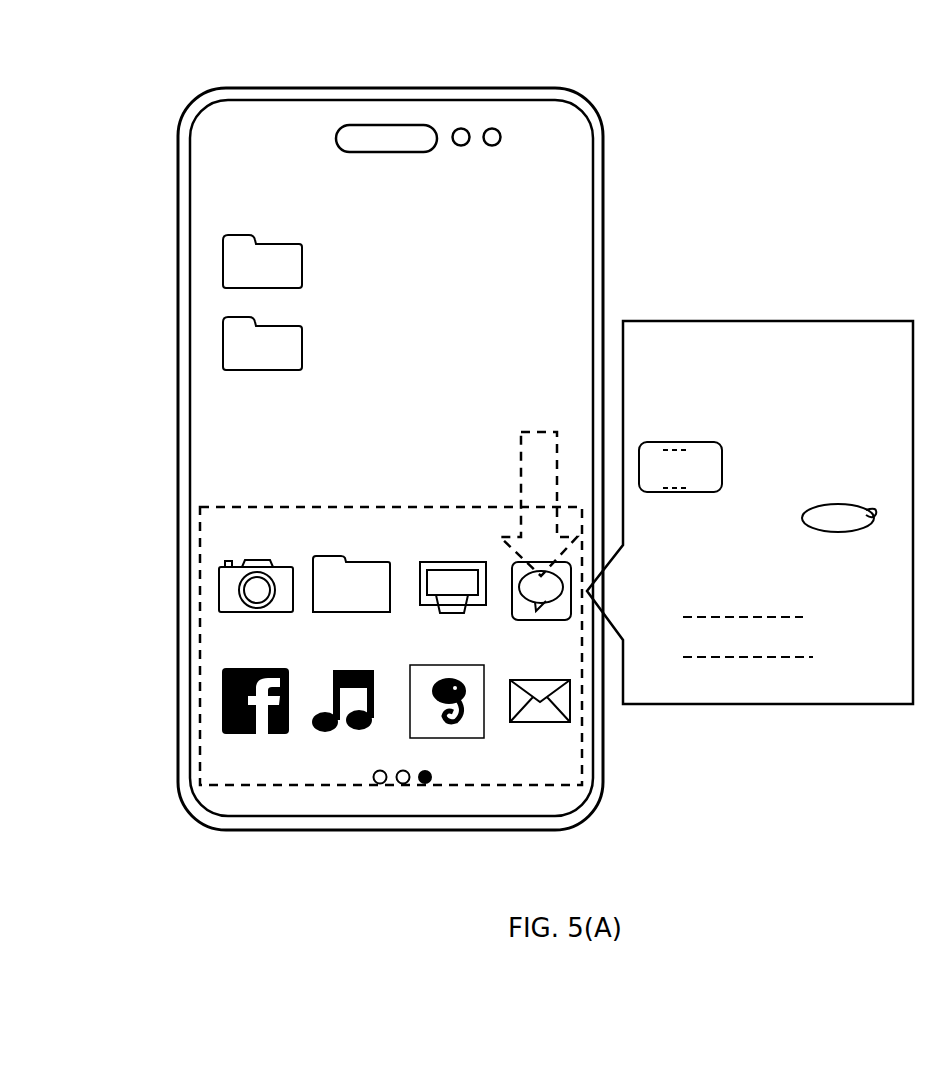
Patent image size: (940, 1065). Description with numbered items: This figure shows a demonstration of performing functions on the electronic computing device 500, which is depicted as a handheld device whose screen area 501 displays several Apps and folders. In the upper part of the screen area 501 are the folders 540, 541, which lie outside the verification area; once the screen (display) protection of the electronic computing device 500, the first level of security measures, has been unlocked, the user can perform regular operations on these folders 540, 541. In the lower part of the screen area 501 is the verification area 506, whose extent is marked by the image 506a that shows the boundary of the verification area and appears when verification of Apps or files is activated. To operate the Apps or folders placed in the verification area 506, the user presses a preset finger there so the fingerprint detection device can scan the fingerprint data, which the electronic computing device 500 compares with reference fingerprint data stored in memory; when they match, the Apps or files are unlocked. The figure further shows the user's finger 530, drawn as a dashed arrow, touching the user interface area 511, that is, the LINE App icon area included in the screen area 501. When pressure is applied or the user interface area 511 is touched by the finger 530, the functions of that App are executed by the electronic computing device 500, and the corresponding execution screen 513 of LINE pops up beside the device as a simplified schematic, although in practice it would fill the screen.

The electronic computing device 500 is at (159, 124).
The screen area 501 is at (535, 100).
The verification area 506 is at (234, 526).
The image showing the boundary of the verification area 506a is at (338, 502).
The user interface area 511 is at (548, 621).
The execution screen 513 is at (793, 322).
The finger 530 is at (537, 479).
The folder 540 is at (265, 265).
The folder 541 is at (255, 348).